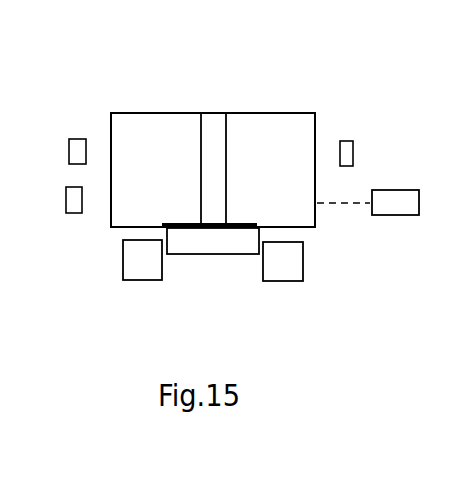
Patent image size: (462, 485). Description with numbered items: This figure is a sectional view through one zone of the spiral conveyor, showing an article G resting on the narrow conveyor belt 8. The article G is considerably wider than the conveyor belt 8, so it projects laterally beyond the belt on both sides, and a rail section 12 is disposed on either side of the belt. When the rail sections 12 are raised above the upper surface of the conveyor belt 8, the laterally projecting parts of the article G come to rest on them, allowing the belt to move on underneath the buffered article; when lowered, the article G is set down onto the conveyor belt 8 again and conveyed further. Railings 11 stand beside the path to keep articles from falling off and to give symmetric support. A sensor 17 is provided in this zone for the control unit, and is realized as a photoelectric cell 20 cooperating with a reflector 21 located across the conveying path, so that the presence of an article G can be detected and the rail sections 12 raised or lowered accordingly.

The article G is at (234, 125).
The conveyor belt 8 is at (200, 240).
The railing 11 is at (76, 147).
The rail section 12 is at (141, 266).
The sensor 17 is at (376, 158).
The photoelectric cell 20 is at (386, 210).
The reflector 21 is at (73, 214).